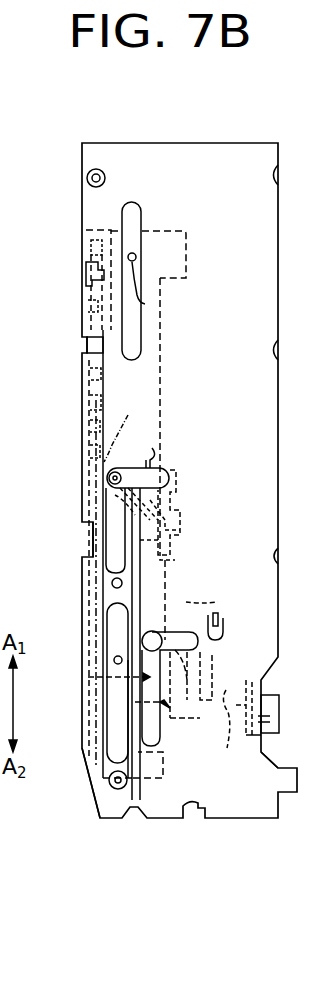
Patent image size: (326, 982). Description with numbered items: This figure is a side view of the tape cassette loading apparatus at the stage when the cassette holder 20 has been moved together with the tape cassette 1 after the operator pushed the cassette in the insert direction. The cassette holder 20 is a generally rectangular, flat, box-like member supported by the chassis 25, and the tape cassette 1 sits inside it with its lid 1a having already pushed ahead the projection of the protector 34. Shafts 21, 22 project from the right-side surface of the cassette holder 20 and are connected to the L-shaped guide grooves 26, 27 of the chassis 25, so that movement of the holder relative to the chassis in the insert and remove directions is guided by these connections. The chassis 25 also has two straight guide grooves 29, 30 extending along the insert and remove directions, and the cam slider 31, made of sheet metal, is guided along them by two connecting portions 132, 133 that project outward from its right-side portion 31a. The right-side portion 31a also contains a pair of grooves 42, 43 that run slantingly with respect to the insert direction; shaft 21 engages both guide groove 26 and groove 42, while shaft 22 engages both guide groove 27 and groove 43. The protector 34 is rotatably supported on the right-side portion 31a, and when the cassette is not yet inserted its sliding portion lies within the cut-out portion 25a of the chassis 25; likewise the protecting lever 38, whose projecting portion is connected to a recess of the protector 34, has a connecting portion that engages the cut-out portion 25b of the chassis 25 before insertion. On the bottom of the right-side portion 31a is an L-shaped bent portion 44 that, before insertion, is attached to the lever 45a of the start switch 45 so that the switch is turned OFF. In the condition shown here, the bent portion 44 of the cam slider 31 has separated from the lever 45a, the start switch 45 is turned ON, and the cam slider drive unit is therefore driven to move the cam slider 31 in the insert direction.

The tape cassette 1 is at (82, 762).
The lid 1a is at (126, 425).
The cassette holder 20 is at (178, 502).
The shaft 21 is at (143, 641).
The shaft 22 is at (115, 479).
The chassis 25 is at (252, 292).
The cut-out portion 25a is at (93, 530).
The cut-out portion 25b is at (87, 345).
The L-shaped guide groove 26 is at (187, 632).
The L-shaped guide groove 27 is at (152, 462).
The straight guide groove 29 is at (112, 709).
The straight guide groove 30 is at (133, 228).
The cam slider 31 is at (188, 248).
The right-side portion 31a is at (161, 373).
The protector 34 is at (100, 412).
The protecting lever 38 is at (88, 284).
The groove 42 is at (147, 724).
The groove 43 is at (172, 528).
The L-shaped bent portion 44 is at (214, 612).
The start switch 45 is at (249, 686).
The lever 45a is at (244, 770).
The connecting portion 132 is at (114, 660).
The connecting portion 133 is at (143, 304).